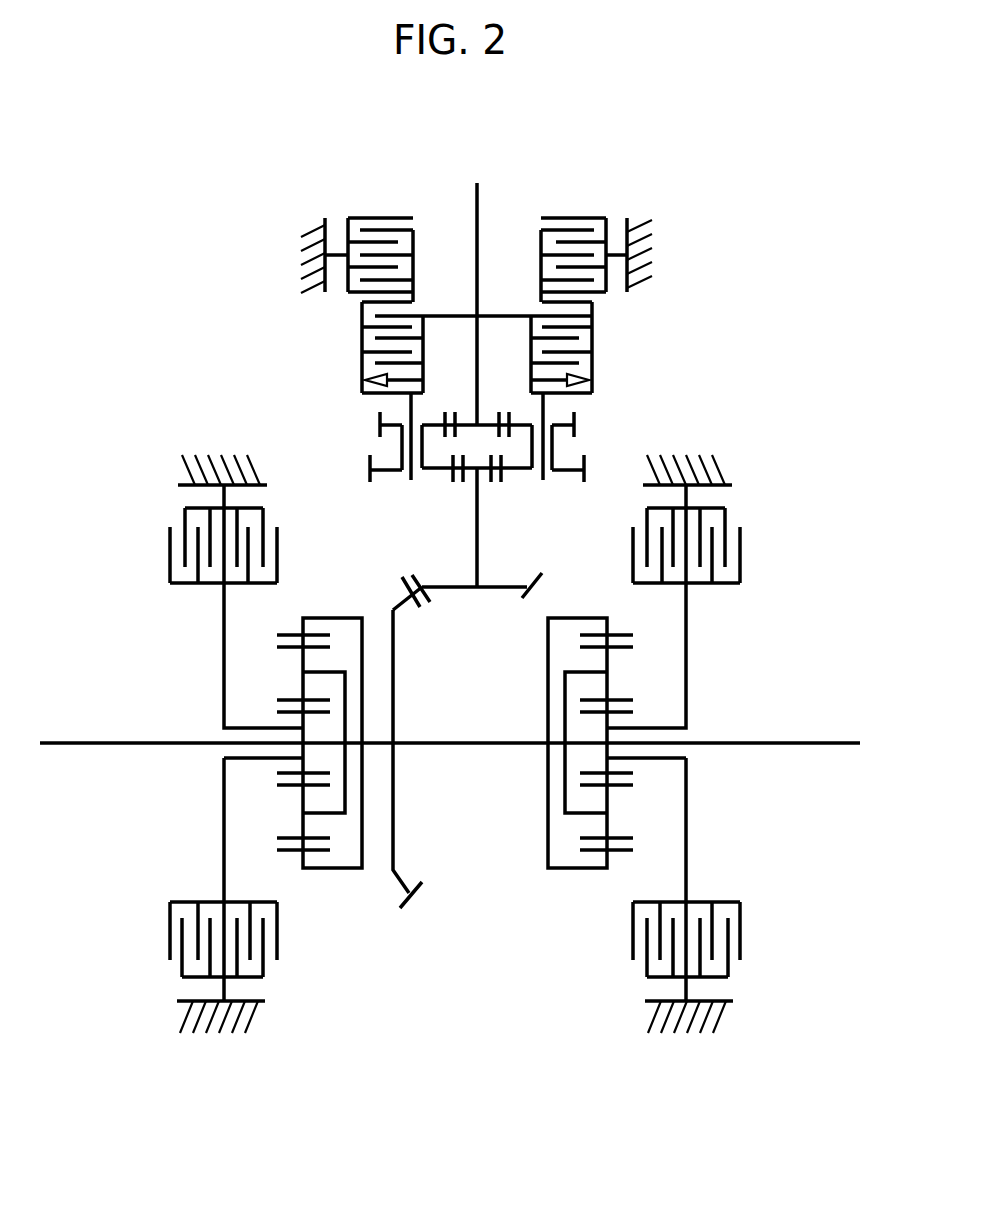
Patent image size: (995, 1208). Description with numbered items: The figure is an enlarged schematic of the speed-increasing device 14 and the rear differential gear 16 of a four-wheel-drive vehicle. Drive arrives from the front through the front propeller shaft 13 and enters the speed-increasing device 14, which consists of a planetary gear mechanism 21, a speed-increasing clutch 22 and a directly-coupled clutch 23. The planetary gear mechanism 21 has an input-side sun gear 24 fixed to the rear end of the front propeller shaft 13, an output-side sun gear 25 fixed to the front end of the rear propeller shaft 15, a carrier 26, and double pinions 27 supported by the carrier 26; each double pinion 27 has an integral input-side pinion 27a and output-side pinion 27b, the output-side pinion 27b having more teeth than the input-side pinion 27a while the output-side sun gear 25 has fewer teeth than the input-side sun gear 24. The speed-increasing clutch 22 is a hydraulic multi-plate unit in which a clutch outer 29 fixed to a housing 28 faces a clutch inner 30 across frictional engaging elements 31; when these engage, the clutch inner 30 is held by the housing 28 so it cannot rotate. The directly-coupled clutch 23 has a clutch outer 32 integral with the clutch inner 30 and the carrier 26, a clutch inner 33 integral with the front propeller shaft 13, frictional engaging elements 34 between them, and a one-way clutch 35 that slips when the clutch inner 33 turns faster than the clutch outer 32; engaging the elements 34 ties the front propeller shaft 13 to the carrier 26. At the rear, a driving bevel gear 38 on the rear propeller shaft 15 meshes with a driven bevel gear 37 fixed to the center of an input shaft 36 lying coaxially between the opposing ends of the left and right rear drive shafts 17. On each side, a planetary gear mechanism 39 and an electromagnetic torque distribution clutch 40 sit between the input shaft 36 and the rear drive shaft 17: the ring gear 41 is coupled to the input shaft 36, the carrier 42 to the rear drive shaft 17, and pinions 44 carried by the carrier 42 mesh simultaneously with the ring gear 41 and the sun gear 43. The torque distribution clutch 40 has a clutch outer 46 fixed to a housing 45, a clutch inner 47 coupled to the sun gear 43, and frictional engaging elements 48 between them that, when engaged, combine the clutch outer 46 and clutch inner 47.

The front propeller shaft 13 is at (478, 208).
The speed-increasing device 14 is at (577, 174).
The rear propeller shaft 15 is at (478, 559).
The rear differential gear 16 is at (411, 978).
The rear drive shafts 17 is at (118, 739).
The planetary gear mechanism 21 is at (598, 439).
The speed-increasing clutch 22 is at (584, 208).
The directly-coupled clutch 23 is at (610, 337).
The input-side sun gear 24 is at (496, 412).
The output-side sun gear 25 is at (490, 483).
The carrier 26 is at (412, 397).
The double pinions 27 is at (386, 488).
The input-side pinion 27a is at (378, 415).
The output-side pinion 27b is at (370, 466).
The housing 28 is at (300, 250).
The clutch outer 29 is at (348, 230).
The clutch inner 30 is at (413, 245).
The frictional engaging elements 31 is at (405, 270).
The clutch outer 32 is at (362, 341).
The clutch inner 33 is at (423, 377).
The frictional engaging elements 34 is at (417, 358).
The one-way clutch 35 is at (592, 380).
The input shaft 36 is at (459, 741).
The driven bevel gear 37 is at (400, 590).
The driving bevel gear 38 is at (420, 577).
The planetary gear mechanism 39 is at (333, 605).
The torque distribution clutch 40 is at (156, 554).
The ring gear 41 is at (277, 638).
The carrier 42 is at (347, 688).
The sun gear 43 is at (277, 713).
The pinions 44 is at (332, 647).
The housing 45 is at (218, 455).
The clutch outer 46 is at (185, 517).
The clutch inner 47 is at (207, 590).
The frictional engaging elements 48 is at (252, 575).